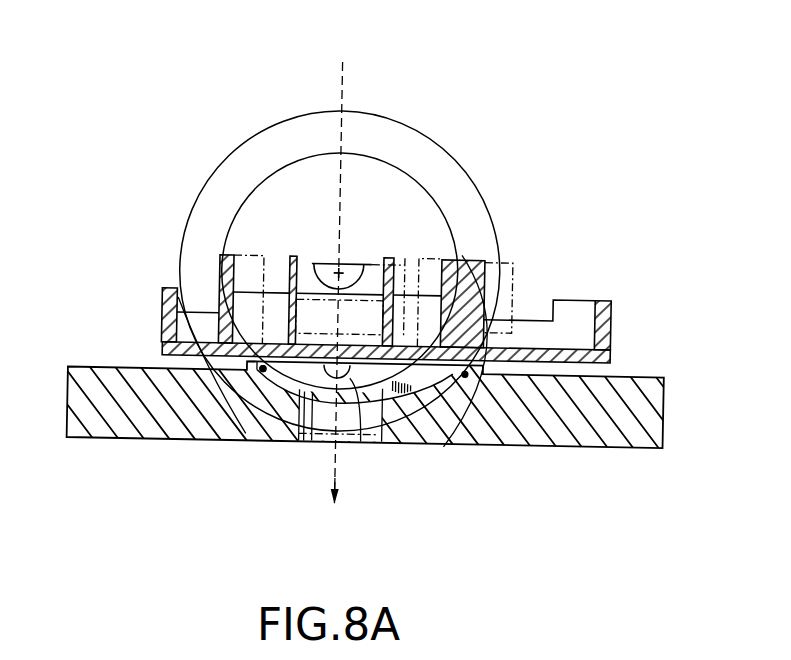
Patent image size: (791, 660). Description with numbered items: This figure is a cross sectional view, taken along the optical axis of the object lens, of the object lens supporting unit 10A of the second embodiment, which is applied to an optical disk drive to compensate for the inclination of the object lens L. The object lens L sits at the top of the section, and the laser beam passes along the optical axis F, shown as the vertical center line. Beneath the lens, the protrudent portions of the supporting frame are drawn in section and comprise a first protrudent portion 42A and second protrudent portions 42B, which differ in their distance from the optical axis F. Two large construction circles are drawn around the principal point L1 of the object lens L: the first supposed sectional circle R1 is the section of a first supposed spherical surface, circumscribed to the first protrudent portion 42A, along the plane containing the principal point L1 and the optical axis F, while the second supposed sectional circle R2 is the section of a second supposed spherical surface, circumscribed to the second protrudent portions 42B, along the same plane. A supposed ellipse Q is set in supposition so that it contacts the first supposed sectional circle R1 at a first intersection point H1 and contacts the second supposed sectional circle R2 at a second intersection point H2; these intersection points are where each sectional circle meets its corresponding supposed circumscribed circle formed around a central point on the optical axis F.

The object lens supporting unit 10A is at (386, 229).
The first supposed sectional circle R1 is at (346, 265).
The second supposed sectional circle R2 is at (380, 161).
The principal point L1 is at (326, 237).
The object lens L is at (350, 232).
The supposed ellipse Q is at (72, 128).
The first intersection point H1 is at (493, 389).
The second intersection point H2 is at (215, 406).
The first protrudent portion 42A is at (427, 462).
The second protrudent portions 42B is at (352, 460).
The optical axis F is at (300, 512).